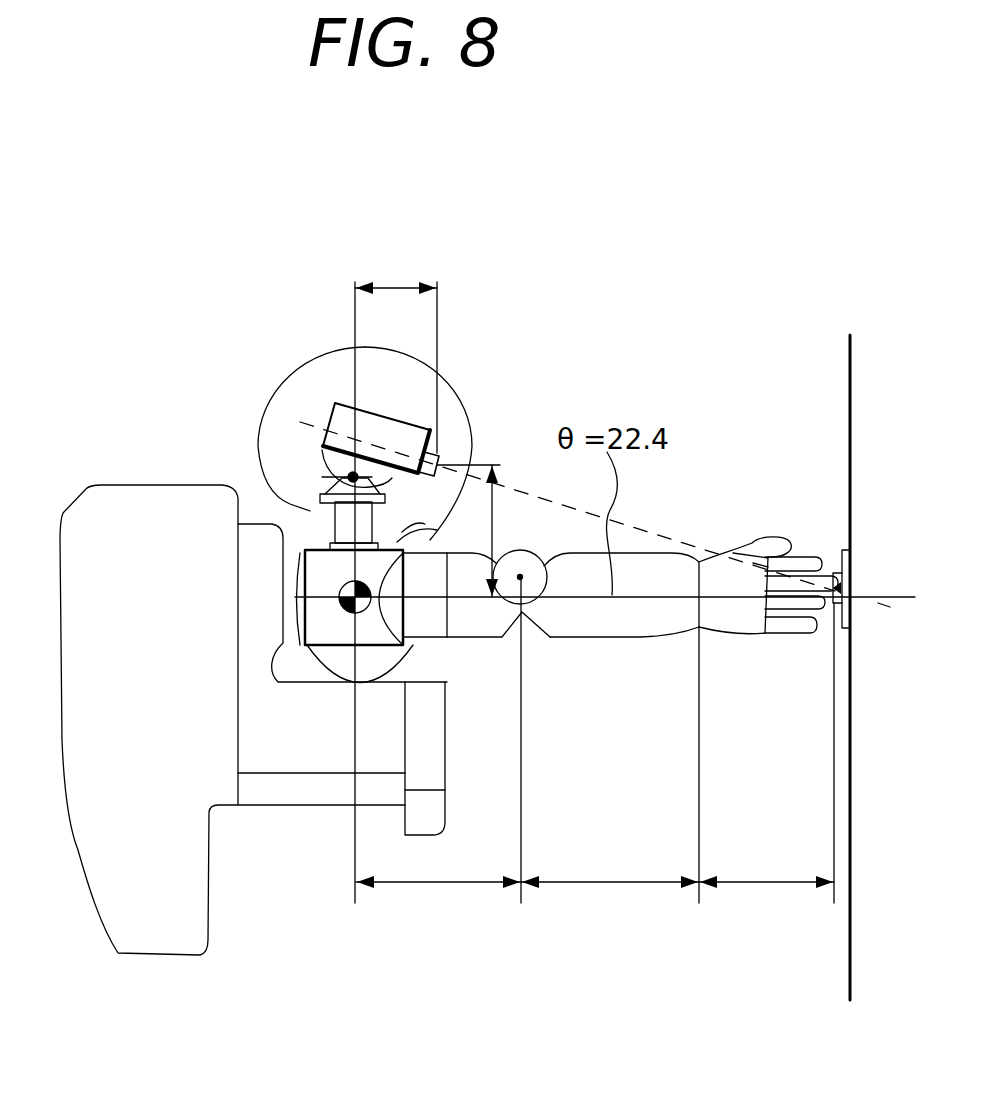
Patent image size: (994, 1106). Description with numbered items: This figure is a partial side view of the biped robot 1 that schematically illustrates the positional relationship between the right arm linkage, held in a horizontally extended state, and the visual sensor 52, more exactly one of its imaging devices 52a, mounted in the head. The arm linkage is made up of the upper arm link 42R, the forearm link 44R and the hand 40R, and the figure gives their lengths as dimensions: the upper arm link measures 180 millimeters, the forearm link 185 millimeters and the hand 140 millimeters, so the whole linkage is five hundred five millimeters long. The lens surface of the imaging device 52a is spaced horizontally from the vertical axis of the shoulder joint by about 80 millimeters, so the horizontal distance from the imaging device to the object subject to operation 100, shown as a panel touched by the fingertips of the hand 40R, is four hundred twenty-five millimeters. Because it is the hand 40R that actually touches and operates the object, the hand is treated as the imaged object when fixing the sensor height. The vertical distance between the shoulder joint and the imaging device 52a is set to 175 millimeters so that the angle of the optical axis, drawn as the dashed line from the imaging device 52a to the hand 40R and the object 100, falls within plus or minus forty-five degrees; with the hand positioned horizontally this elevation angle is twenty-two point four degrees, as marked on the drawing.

The biped robot 1 is at (172, 455).
The visual sensor 52 is at (330, 414).
The imaging device 52a is at (567, 506).
The object subject to operation 100 is at (838, 558).
The right hand 40R is at (748, 633).
The right upper arm link 42R is at (472, 640).
The right forearm link 44R is at (610, 640).
The horizontal distance of imaging device lens from shoulder joint axis 80 is at (396, 576).
The vertical distance from shoulder joints to imaging devices 175 is at (493, 531).
The upper arm link length 180 is at (438, 903).
The forearm link length 185 is at (610, 903).
The hand length 140 is at (766, 903).